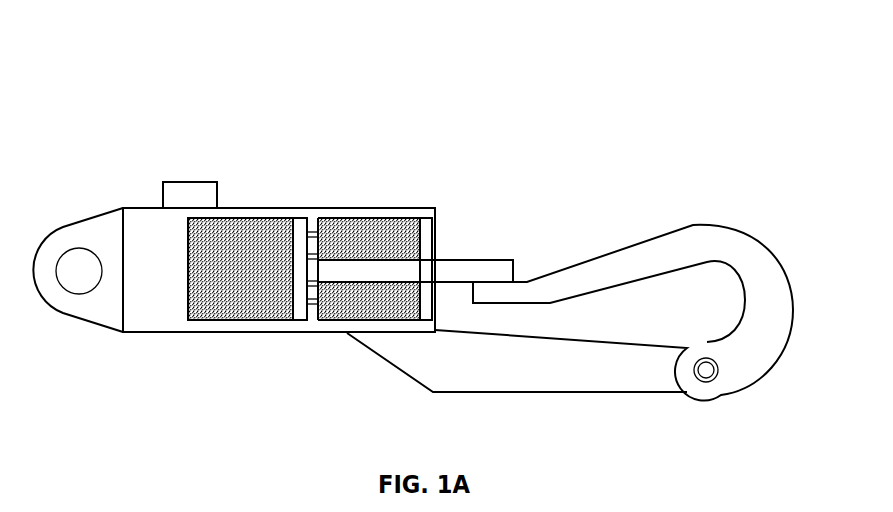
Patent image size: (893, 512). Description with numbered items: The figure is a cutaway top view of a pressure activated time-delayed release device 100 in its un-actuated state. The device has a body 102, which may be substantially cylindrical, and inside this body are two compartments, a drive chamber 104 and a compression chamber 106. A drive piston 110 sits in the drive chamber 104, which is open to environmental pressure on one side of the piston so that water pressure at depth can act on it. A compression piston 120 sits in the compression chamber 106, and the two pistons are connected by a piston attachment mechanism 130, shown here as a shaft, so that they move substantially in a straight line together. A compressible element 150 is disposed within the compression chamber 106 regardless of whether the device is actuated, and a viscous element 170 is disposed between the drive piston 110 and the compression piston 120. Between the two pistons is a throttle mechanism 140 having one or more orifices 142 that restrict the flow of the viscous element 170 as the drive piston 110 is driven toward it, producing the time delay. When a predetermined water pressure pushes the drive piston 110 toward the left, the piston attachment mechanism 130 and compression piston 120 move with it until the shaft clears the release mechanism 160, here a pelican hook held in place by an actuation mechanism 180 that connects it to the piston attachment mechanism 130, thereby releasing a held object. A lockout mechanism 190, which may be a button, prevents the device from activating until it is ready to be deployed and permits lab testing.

The pressure activated time-delayed release device 100 is at (117, 53).
The body 102 is at (121, 201).
The drive chamber 104 is at (403, 241).
The compression chamber 106 is at (248, 232).
The drive piston 110 is at (419, 302).
The compression piston 120 is at (290, 283).
The piston attachment mechanism 130 is at (354, 286).
The throttle mechanism 140 is at (318, 293).
The orifices 142 is at (317, 234).
The compressible element 150 is at (245, 269).
The release mechanism 160 is at (592, 394).
The viscous element 170 is at (377, 249).
The actuation mechanism 180 is at (463, 258).
The lockout mechanism 190 is at (193, 180).